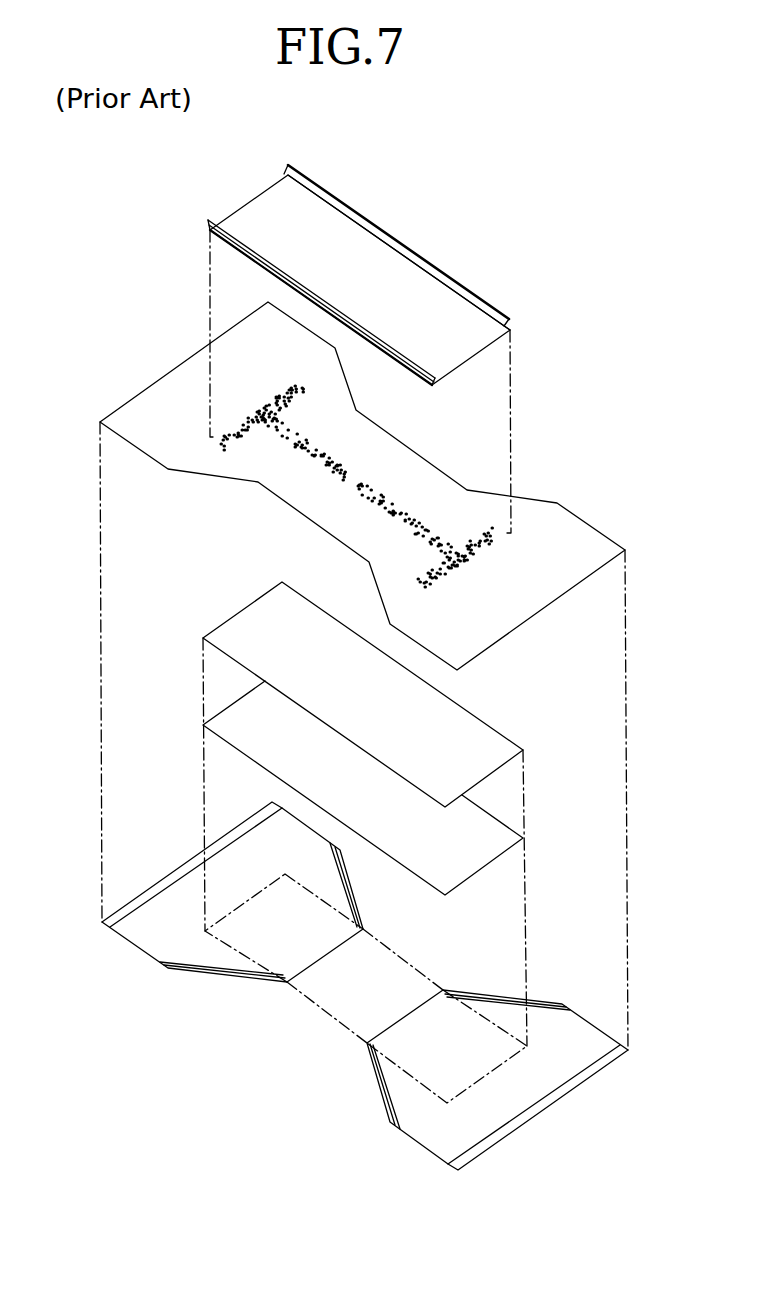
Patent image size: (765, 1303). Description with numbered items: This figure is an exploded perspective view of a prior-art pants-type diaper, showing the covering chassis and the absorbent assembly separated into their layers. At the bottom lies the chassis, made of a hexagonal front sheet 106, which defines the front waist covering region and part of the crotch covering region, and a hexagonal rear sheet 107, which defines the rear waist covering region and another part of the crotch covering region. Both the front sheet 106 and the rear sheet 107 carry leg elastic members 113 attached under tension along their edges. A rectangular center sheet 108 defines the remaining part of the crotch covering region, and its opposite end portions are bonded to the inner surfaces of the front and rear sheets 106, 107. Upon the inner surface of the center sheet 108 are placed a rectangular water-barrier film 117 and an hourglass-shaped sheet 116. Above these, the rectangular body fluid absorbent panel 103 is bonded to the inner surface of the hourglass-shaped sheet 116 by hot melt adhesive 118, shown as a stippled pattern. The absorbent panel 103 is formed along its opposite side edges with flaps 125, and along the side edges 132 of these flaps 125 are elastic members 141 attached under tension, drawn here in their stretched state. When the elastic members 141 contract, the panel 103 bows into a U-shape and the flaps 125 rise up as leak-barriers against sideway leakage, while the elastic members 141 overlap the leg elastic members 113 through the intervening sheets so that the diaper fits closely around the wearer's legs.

The body fluid absorbent panel 103 is at (324, 276).
The flaps 125 is at (216, 221).
The side edges 132 is at (243, 248).
The elastic members 141 is at (440, 265).
The hourglass-shaped sheet 116 is at (578, 514).
The hot melt adhesive 118 is at (400, 503).
The water-barrier film 117 is at (484, 736).
The center sheet 108 is at (510, 836).
The rear sheet 107 is at (127, 942).
The front sheet 106 is at (422, 1148).
The leg elastic members 113 is at (233, 972).